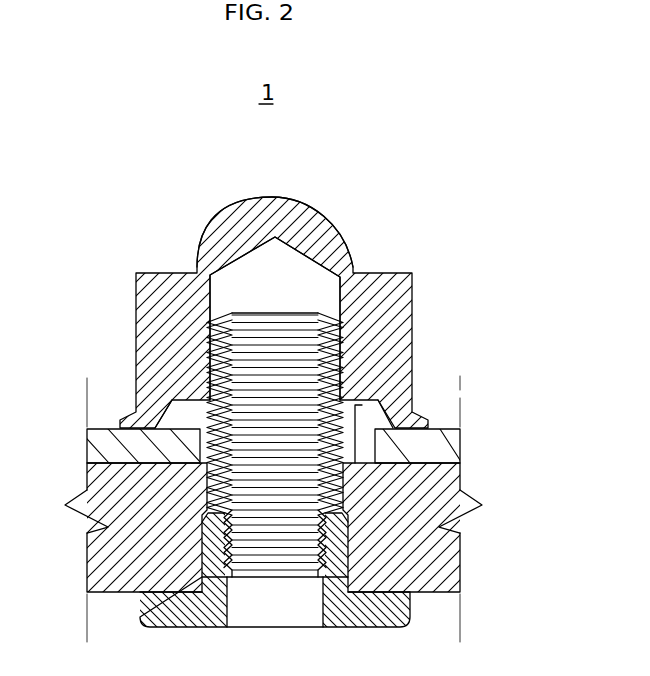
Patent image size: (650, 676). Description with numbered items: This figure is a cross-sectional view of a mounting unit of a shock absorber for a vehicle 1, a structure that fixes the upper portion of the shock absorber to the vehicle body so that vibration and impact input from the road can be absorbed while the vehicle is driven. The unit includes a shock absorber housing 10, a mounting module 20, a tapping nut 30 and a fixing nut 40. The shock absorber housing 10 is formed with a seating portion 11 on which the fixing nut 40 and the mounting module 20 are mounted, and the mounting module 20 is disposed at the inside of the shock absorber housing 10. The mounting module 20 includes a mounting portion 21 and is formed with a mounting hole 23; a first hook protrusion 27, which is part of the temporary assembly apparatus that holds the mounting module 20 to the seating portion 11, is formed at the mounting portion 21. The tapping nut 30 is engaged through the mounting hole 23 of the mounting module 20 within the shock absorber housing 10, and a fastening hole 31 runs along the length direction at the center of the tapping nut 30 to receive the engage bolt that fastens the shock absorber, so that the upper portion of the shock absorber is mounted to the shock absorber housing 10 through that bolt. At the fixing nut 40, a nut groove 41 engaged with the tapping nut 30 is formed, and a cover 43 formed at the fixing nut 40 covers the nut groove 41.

The vehicle 1 is at (275, 445).
The shock absorber housing 10 is at (440, 444).
The seating portion 11 is at (107, 445).
The mounting module 20 is at (470, 560).
The mounting portion 21 is at (106, 529).
The mounting hole 23 is at (206, 542).
The first hook protrusion 27 is at (381, 401).
The tapping nut 30 is at (187, 625).
The fastening hole 31 is at (245, 552).
The fixing nut 40 is at (425, 311).
The nut groove 41 is at (214, 296).
The cover 43 is at (281, 201).